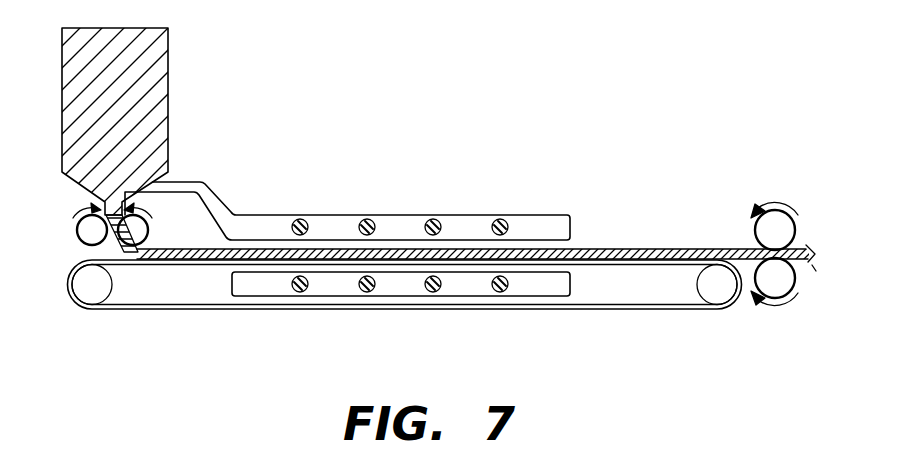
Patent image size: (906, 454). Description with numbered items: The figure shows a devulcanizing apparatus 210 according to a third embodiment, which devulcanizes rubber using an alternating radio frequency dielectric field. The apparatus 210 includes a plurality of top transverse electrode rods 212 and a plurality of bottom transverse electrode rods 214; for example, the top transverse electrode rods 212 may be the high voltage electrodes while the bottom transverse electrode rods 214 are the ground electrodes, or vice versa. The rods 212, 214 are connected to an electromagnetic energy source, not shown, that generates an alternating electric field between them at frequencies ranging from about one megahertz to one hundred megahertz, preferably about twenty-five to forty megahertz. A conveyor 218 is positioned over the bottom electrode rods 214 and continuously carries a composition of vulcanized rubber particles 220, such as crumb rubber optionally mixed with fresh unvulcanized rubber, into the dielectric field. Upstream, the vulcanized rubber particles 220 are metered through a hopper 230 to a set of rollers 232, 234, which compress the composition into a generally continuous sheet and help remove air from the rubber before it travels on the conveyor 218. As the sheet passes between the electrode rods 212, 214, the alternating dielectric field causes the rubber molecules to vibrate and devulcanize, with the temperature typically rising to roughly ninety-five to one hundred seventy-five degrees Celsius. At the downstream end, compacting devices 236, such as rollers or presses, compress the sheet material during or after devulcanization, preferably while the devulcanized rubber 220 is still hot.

The devulcanizing apparatus 210 is at (547, 98).
The top transverse electrode rods 212 is at (299, 219).
The bottom transverse electrode rods 214 is at (303, 293).
The conveyor 218 is at (632, 310).
The vulcanized rubber particles 220 is at (214, 258).
The hopper 230 is at (157, 53).
The roller 232 is at (134, 232).
The roller 234 is at (91, 235).
The compacting devices 236 is at (785, 232).